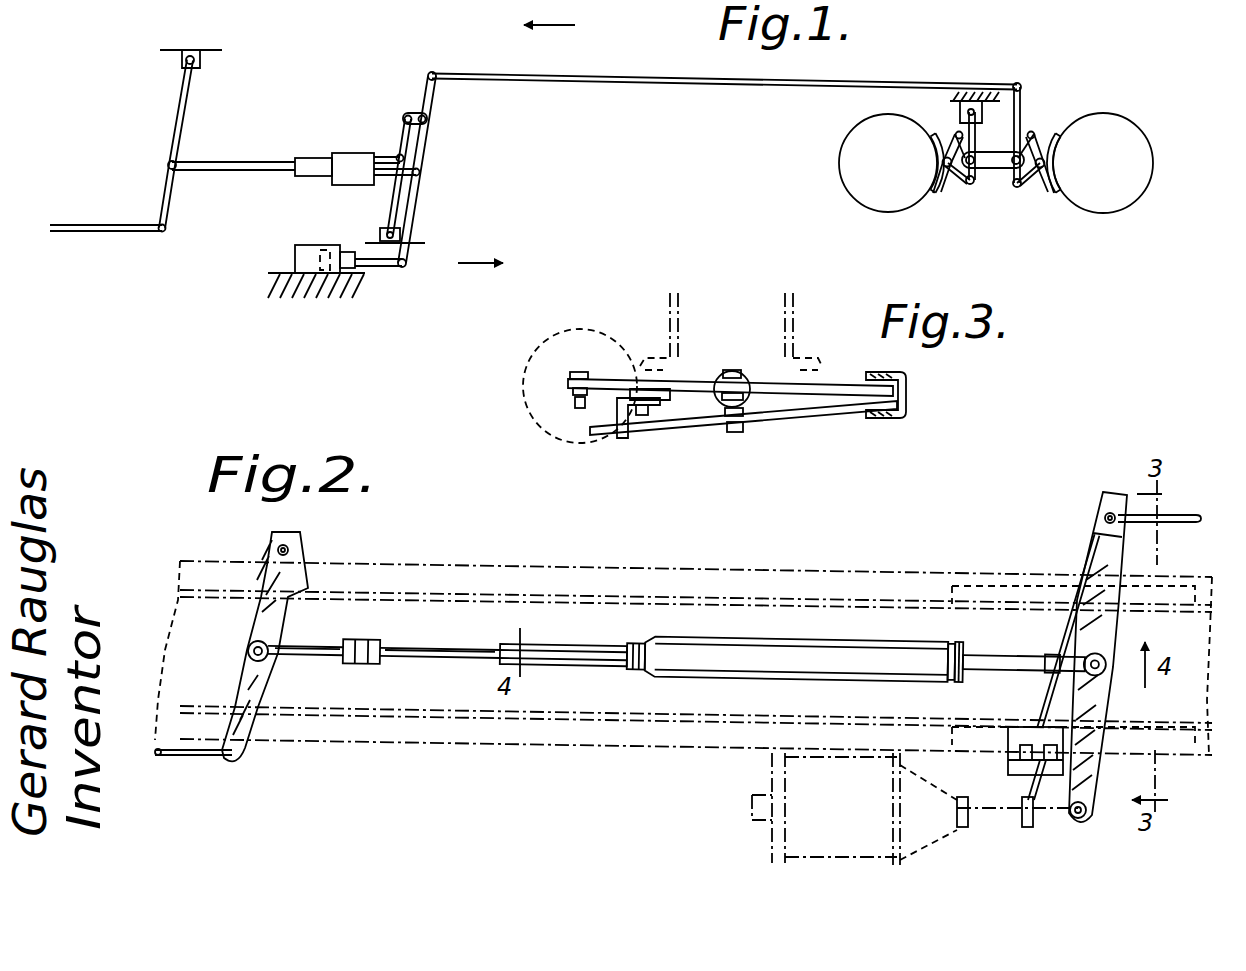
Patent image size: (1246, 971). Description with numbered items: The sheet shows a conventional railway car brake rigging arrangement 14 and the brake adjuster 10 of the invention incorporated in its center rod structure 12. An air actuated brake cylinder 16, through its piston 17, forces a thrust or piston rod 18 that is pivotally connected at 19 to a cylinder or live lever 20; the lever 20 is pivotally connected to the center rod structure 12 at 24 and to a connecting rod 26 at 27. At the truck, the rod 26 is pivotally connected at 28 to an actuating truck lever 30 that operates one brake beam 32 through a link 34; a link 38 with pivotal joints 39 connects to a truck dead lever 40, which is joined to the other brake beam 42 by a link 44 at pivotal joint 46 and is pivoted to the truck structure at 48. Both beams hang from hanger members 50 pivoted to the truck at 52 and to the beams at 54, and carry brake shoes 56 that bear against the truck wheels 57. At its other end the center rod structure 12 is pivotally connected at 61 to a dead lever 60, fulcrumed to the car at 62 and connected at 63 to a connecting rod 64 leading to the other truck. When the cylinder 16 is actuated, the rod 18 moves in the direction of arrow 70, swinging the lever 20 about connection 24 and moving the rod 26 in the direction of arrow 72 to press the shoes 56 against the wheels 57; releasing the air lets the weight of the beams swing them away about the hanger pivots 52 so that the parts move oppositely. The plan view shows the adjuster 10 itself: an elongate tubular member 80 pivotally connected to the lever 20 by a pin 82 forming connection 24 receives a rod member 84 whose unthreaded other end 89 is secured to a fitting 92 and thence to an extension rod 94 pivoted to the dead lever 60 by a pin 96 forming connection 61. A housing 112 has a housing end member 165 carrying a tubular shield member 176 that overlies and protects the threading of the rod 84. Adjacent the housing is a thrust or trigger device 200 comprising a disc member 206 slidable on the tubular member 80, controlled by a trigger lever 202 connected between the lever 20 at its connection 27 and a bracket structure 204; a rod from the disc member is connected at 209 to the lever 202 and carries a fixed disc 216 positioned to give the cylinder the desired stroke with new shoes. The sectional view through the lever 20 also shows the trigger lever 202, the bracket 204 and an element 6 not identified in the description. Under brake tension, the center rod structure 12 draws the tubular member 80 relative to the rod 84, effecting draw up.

In FIG. 3, the outline circle 6 is at (575, 335).
In FIG. 1, the adjuster 10 is at (350, 150).
In FIG. 2, the adjuster 10 is at (801, 607).
In FIG. 1, the center rod structure 12 is at (260, 180).
In FIG. 2, the center rod structure 12 is at (711, 668).
In FIG. 1, the brake rigging arrangement 14 is at (914, 66).
In FIG. 1, the brake cylinder 16 is at (302, 285).
In FIG. 2, the brake cylinder 16 is at (795, 843).
In FIG. 1, the piston 17 is at (318, 300).
In FIG. 1, the thrust or piston rod 18 is at (386, 268).
In FIG. 2, the thrust or piston rod 18 is at (1032, 826).
In FIG. 1, the pivotal connection 19 is at (404, 268).
In FIG. 3, the pivotal connection 19 is at (583, 370).
In FIG. 2, the pivotal connection 19 is at (1080, 820).
In FIG. 1, the cylinder or live lever 20 is at (412, 212).
In FIG. 3, the cylinder or live lever 20 is at (686, 377).
In FIG. 2, the cylinder or live lever 20 is at (1100, 708).
In FIG. 1, the pivotal connection 24 is at (422, 172).
In FIG. 1, the connecting rod 26 is at (605, 76).
In FIG. 2, the connecting rod 26 is at (1190, 512).
In FIG. 1, the pivotal connection 27 is at (438, 74).
In FIG. 2, the pivotal connection 27 is at (1102, 515).
In FIG. 1, the pivotal connection 28 is at (1025, 84).
In FIG. 1, the actuating truck lever 30 is at (1025, 105).
In FIG. 1, the brake beam 32 is at (1044, 192).
In FIG. 1, the link 34 is at (1030, 188).
In FIG. 1, the link 38 is at (990, 168).
In FIG. 1, the pivotal joints 39 is at (995, 152).
In FIG. 1, the truck dead lever 40 is at (977, 134).
In FIG. 1, the brake beam 42 is at (930, 200).
In FIG. 1, the link 44 is at (945, 196).
In FIG. 1, the pivotal joint 46 is at (970, 185).
In FIG. 1, the pivotal connection 48 is at (980, 110).
In FIG. 1, the hanger members 50 is at (1040, 130).
In FIG. 1, the pivot 52 is at (1033, 130).
In FIG. 1, the pivot 54 is at (1046, 160).
In FIG. 1, the brake shoes 56 is at (1060, 178).
In FIG. 1, the truck wheels 57 is at (1150, 150).
In FIG. 1, the dead lever 60 is at (180, 108).
In FIG. 2, the dead lever 60 is at (247, 670).
In FIG. 1, the pivotal connection 61 is at (170, 162).
In FIG. 1, the fulcrum 62 is at (200, 60).
In FIG. 2, the fulcrum 62 is at (290, 548).
In FIG. 1, the pivotal connection 63 is at (164, 233).
In FIG. 1, the connecting rod 64 is at (92, 234).
In FIG. 1, the arrow 70 is at (470, 265).
In FIG. 1, the arrow 72 is at (560, 22).
In FIG. 2, the tubular member 80 is at (990, 640).
In FIG. 3, the pin 82 is at (738, 372).
In FIG. 2, the pin 82 is at (1103, 644).
In FIG. 2, the rod member 84 is at (447, 645).
In FIG. 2, the other end of rod member 89 is at (408, 662).
In FIG. 2, the fitting 92 is at (362, 666).
In FIG. 2, the extension rod 94 is at (305, 658).
In FIG. 2, the pin 96 is at (251, 643).
In FIG. 2, the housing 112 is at (720, 640).
In FIG. 2, the housing end member 165 is at (635, 665).
In FIG. 2, the tubular shield member 176 is at (560, 645).
In FIG. 1, the thrust or trigger device 200 is at (360, 160).
In FIG. 3, the thrust or trigger device 200 is at (640, 438).
In FIG. 2, the thrust or trigger device 200 is at (1043, 588).
In FIG. 1, the trigger lever 202 is at (394, 197).
In FIG. 3, the trigger lever 202 is at (790, 408).
In FIG. 2, the trigger lever 202 is at (1068, 633).
In FIG. 1, the bracket structure 204 is at (372, 234).
In FIG. 3, the bracket structure 204 is at (608, 452).
In FIG. 2, the bracket structure 204 is at (1003, 781).
In FIG. 2, the disc member 206 is at (958, 628).
In FIG. 1, the connection 209 is at (406, 158).
In FIG. 3, the connection 209 is at (733, 436).
In FIG. 3, the disc 216 is at (742, 418).